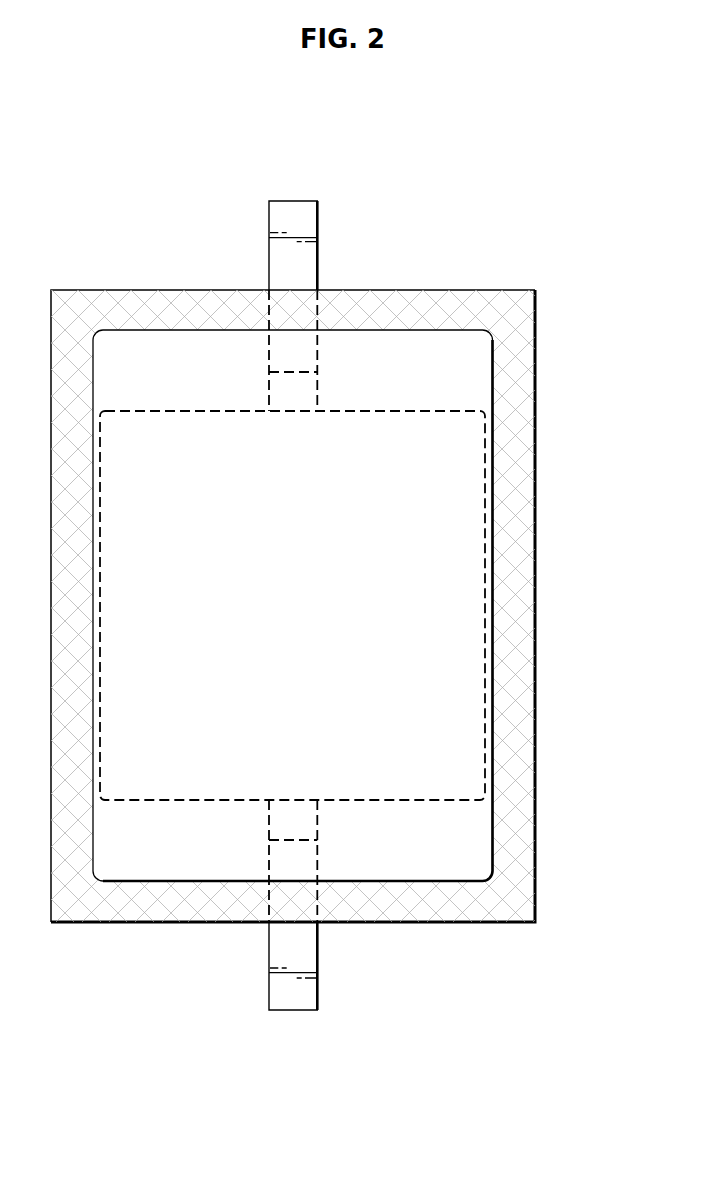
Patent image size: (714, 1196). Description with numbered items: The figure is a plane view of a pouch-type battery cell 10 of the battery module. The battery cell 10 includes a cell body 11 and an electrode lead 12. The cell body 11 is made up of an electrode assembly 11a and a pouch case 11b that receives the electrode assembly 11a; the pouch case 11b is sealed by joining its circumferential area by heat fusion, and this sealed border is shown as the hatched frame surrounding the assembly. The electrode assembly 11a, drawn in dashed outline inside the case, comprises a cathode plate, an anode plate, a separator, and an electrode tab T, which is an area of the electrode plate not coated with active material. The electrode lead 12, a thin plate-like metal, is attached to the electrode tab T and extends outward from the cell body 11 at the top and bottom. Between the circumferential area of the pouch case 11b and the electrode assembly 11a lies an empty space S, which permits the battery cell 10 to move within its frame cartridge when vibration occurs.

The battery cell 10 is at (427, 147).
The cell body 11 is at (595, 377).
The electrode assembly 11a is at (466, 493).
The pouch case 11b is at (537, 392).
The electrode lead 12 is at (319, 221).
The empty space S is at (438, 362).
The electrode tab T is at (314, 403).